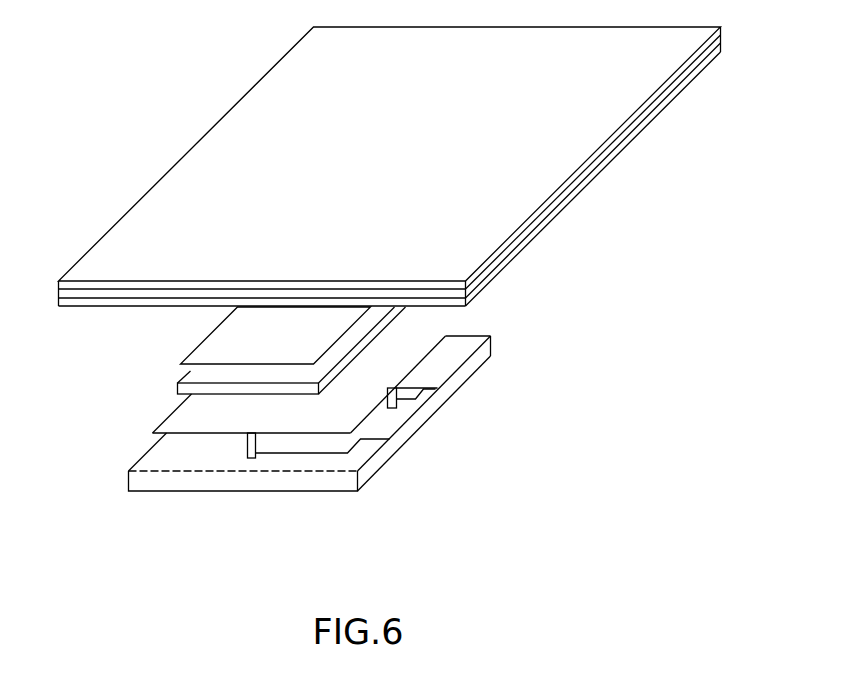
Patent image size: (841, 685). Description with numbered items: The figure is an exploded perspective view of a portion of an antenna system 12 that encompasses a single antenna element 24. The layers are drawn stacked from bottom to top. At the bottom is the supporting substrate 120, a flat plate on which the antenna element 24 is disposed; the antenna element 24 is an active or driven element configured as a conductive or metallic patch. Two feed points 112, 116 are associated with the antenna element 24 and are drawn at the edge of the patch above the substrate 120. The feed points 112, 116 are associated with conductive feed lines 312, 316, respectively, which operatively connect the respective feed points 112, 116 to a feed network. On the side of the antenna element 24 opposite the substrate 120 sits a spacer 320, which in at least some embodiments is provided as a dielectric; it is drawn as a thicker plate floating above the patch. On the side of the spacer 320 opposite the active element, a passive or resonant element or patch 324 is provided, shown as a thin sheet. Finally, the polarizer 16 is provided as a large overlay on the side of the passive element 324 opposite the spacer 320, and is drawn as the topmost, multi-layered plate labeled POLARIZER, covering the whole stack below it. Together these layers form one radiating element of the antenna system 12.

The antenna system 12 is at (95, 388).
The polarizer 16 is at (600, 170).
The antenna element 24 is at (173, 413).
The feed point 112 is at (395, 387).
The feed point 116 is at (245, 447).
The substrate 120 is at (152, 456).
The conductive feed line 312 is at (430, 393).
The conductive feed line 316 is at (302, 452).
The spacer 320 is at (178, 381).
The passive element 324 is at (213, 348).